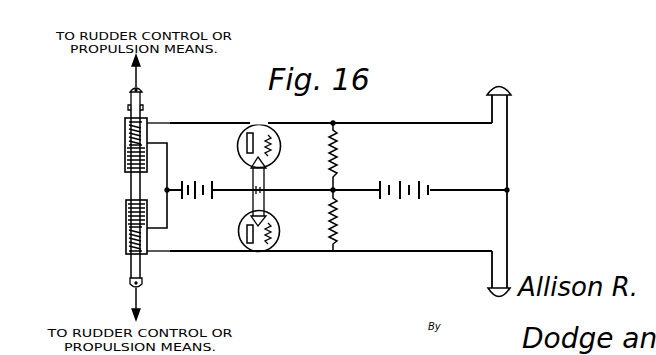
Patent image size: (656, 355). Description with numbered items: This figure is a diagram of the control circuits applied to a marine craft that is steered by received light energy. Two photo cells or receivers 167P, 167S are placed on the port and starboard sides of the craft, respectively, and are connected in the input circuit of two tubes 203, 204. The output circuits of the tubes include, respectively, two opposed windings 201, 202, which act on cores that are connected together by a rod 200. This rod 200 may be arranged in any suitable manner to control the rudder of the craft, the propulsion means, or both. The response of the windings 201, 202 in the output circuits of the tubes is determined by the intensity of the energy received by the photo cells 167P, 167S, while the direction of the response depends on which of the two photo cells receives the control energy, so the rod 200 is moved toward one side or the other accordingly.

The rod 200 is at (131, 186).
The winding 201 is at (126, 238).
The winding 202 is at (125, 137).
The tube 203 is at (239, 150).
The tube 204 is at (250, 252).
The photo cell or receiver 167P is at (500, 83).
The photo cell or receiver 167S is at (489, 293).